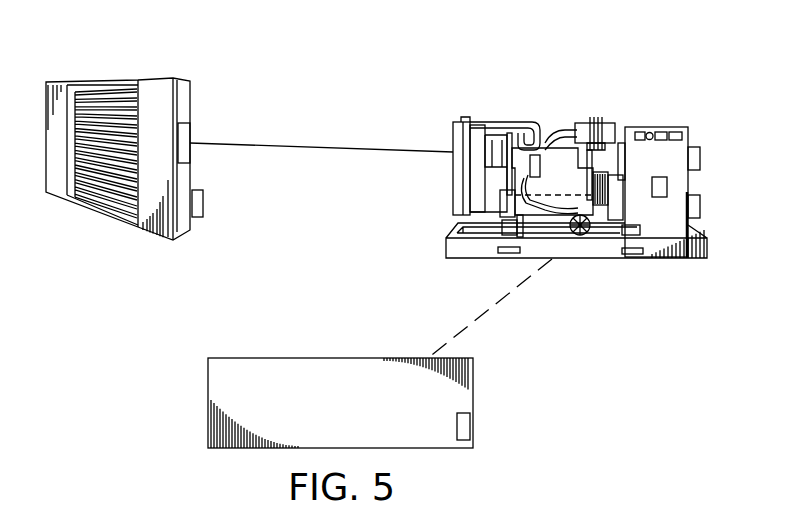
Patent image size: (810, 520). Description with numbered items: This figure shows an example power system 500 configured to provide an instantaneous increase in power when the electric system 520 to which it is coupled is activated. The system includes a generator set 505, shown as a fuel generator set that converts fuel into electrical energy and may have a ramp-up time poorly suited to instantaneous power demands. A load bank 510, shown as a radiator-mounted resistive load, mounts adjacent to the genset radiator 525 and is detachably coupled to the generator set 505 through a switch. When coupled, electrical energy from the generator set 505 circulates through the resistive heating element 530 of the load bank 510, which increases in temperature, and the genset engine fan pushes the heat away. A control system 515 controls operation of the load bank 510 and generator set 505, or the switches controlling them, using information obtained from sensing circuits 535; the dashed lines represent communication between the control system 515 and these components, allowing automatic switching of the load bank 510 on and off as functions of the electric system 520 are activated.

The power system 500 is at (560, 71).
The generator set 505 is at (679, 112).
The load bank 510 is at (84, 61).
The control system 515 is at (702, 157).
The electric system 520 is at (362, 418).
The genset radiator 525 is at (452, 183).
The resistive heating element 530 is at (102, 197).
The sensing circuits 535 is at (203, 203).